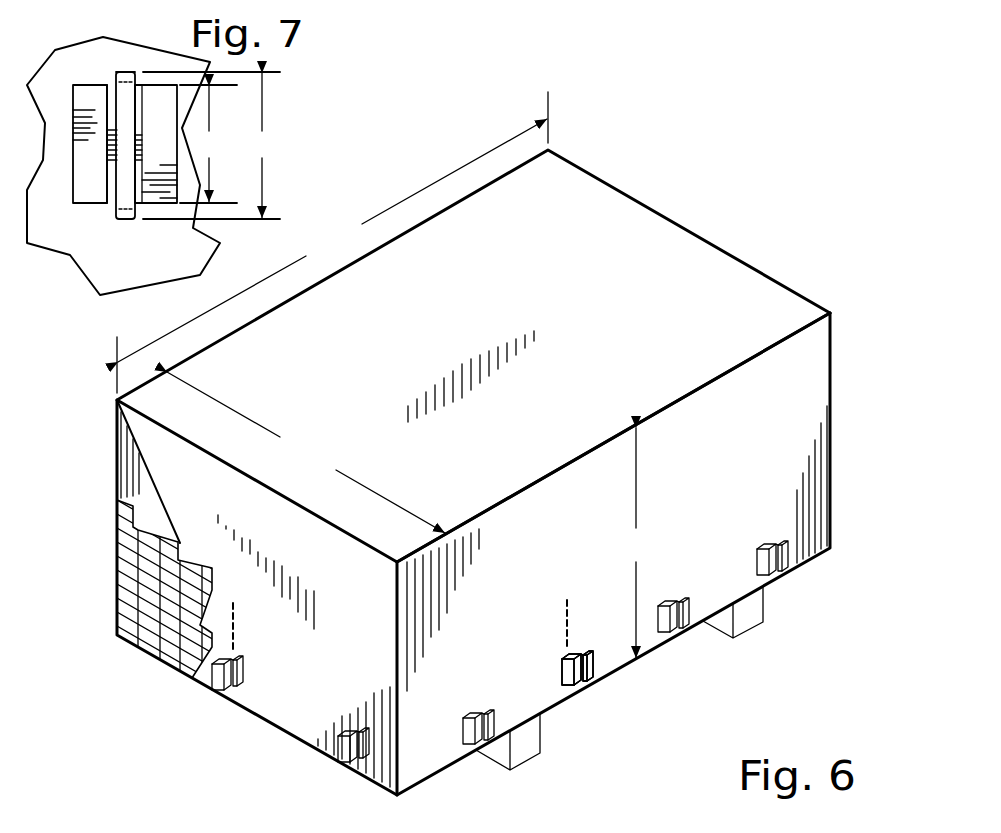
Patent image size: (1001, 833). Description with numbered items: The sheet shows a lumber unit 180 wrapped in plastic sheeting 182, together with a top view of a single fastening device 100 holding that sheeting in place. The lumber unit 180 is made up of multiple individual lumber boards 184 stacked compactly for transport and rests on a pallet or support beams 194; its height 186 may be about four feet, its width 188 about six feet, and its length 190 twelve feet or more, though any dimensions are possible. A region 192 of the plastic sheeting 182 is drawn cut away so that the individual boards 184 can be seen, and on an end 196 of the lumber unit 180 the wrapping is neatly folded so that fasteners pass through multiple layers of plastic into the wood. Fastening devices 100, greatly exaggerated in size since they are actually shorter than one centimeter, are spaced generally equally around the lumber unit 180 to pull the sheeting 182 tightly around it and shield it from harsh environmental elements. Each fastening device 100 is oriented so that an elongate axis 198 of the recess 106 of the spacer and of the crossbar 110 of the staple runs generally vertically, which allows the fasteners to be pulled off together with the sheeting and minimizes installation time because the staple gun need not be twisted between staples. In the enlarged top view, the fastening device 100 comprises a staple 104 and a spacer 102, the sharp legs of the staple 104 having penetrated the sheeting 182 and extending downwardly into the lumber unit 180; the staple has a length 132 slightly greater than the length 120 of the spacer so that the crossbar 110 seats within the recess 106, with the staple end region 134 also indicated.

In FIG. 6, the fastening device 100 is at (690, 605).
In FIG. 7, the spacer 102 is at (93, 167).
In FIG. 7, the staple 104 is at (125, 117).
In FIG. 6, the recess 106 is at (578, 672).
In FIG. 7, the recess 106 is at (118, 178).
In FIG. 6, the crossbar 110 is at (586, 657).
In FIG. 7, the length of spacer 120 is at (208, 144).
In FIG. 7, the length of staple 132 is at (213, 145).
In FIG. 7, the rod end 134 is at (125, 216).
In FIG. 6, the lumber unit 180 is at (678, 262).
In FIG. 6, the plastic sheeting 182 is at (773, 310).
In FIG. 7, the plastic sheeting 182 is at (147, 276).
In FIG. 6, the lumber boards 184 is at (145, 587).
In FIG. 6, the height 186 is at (638, 543).
In FIG. 6, the width 188 is at (306, 452).
In FIG. 6, the length 190 is at (332, 242).
In FIG. 6, the region 192 is at (145, 655).
In FIG. 6, the support beams 194 is at (750, 610).
In FIG. 6, the end 196 is at (262, 690).
In FIG. 6, the elongate axis 198 is at (563, 618).